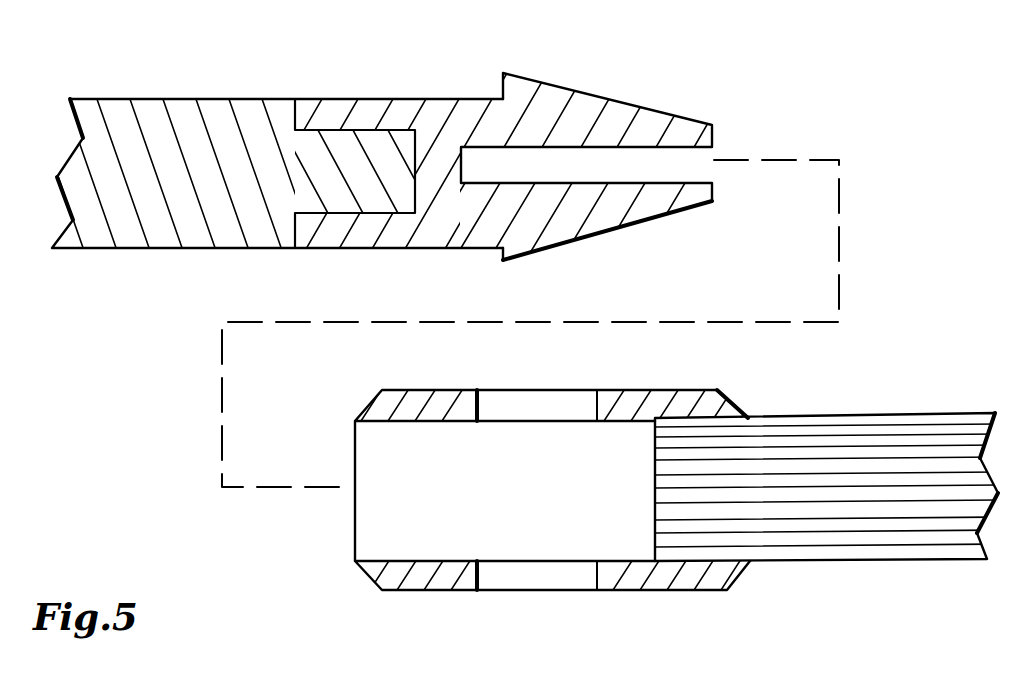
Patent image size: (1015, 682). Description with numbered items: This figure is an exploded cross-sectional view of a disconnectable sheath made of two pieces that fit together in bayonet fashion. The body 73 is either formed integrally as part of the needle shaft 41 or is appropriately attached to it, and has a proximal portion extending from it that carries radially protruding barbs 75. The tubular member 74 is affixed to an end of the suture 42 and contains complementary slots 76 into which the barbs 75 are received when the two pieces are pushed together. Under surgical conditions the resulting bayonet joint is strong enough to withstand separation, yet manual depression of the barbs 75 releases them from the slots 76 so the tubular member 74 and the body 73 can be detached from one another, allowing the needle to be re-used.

The connector body 41 is at (188, 216).
The suture 42 is at (826, 519).
The body 73 is at (430, 116).
The tubular member 74 is at (630, 402).
The barbs 75 is at (540, 110).
The slots 76 is at (507, 407).